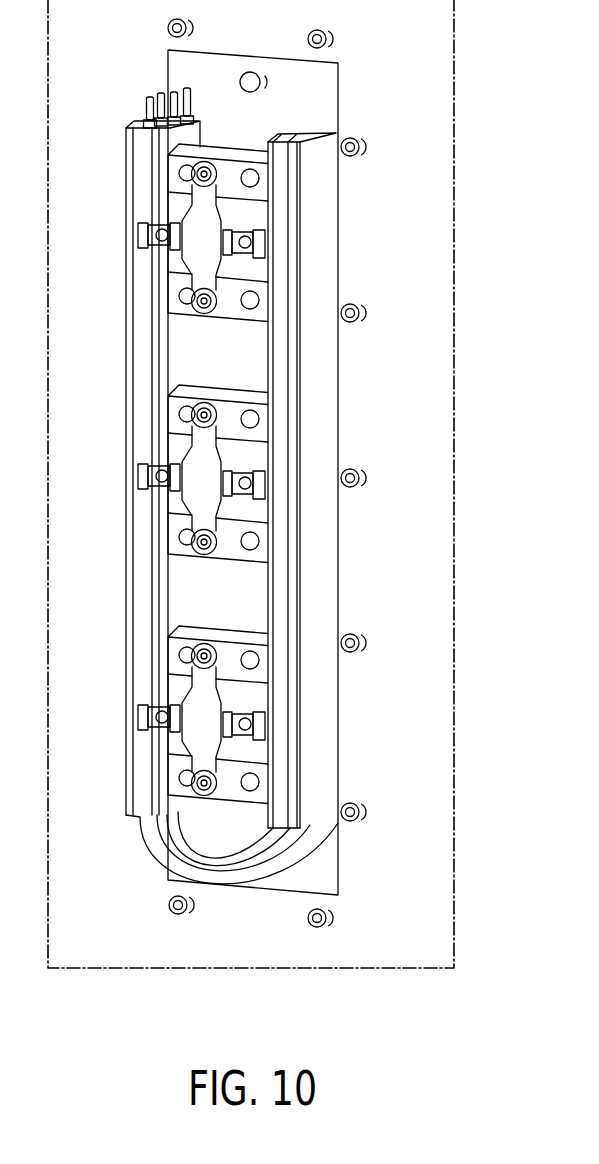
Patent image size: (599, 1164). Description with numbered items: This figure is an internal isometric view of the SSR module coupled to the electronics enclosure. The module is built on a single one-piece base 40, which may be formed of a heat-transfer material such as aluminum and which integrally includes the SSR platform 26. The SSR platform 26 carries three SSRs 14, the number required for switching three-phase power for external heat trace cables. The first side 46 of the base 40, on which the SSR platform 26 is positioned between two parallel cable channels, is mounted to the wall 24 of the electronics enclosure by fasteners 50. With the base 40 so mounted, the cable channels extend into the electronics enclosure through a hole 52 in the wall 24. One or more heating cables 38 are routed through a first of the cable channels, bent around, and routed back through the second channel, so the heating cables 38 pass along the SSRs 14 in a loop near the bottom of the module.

The SSR 14 is at (262, 312).
The wall 24 is at (408, 202).
The SSR platform 26 is at (327, 90).
The heating cable 38 is at (323, 840).
The base 40 is at (302, 82).
The first side 46 is at (308, 630).
The fastener 50 is at (359, 312).
The hole 52 is at (170, 57).